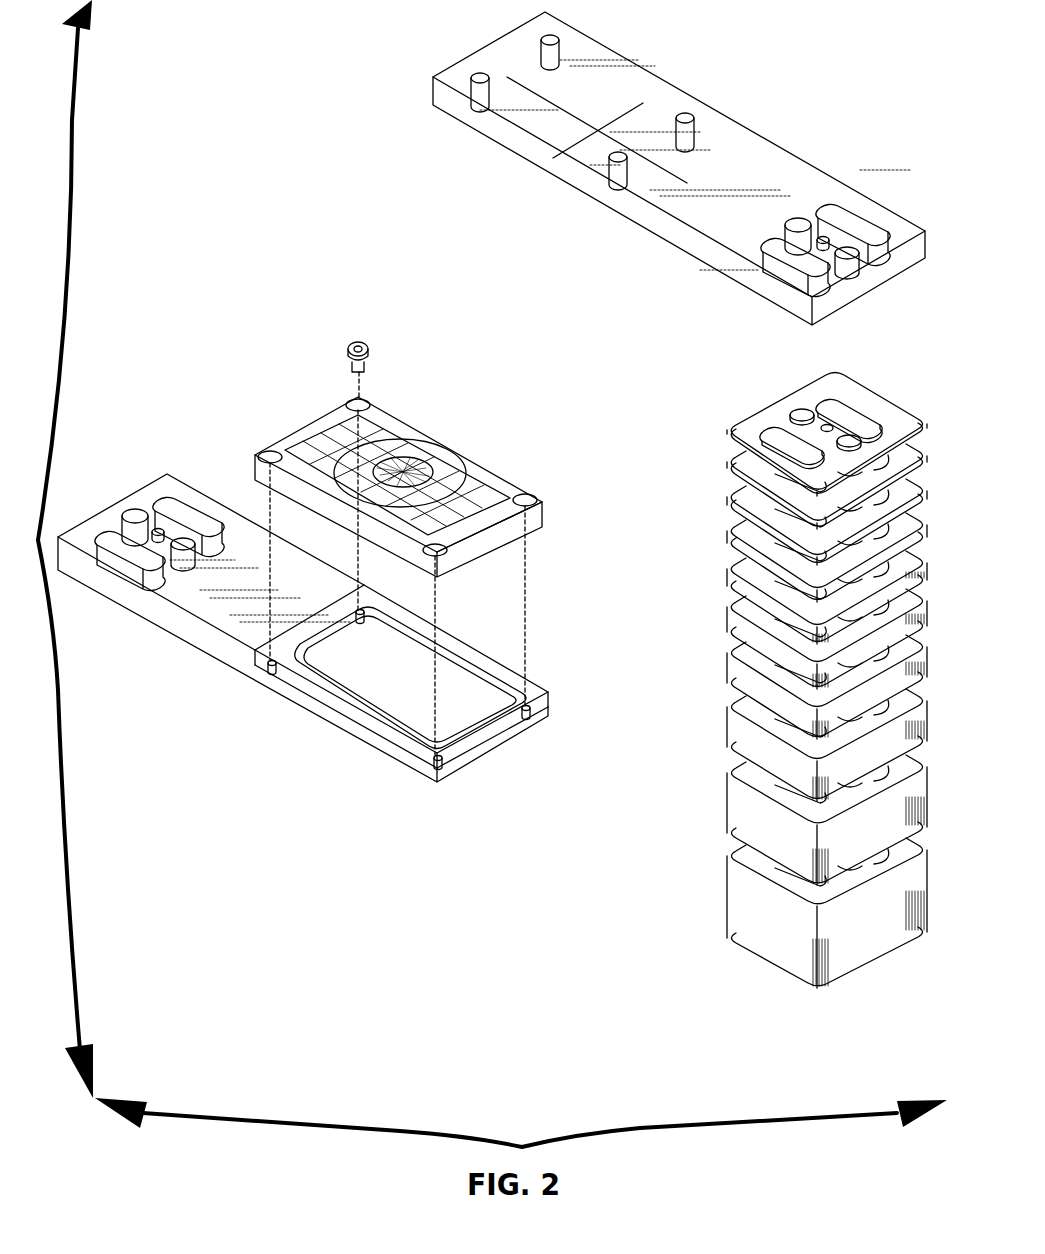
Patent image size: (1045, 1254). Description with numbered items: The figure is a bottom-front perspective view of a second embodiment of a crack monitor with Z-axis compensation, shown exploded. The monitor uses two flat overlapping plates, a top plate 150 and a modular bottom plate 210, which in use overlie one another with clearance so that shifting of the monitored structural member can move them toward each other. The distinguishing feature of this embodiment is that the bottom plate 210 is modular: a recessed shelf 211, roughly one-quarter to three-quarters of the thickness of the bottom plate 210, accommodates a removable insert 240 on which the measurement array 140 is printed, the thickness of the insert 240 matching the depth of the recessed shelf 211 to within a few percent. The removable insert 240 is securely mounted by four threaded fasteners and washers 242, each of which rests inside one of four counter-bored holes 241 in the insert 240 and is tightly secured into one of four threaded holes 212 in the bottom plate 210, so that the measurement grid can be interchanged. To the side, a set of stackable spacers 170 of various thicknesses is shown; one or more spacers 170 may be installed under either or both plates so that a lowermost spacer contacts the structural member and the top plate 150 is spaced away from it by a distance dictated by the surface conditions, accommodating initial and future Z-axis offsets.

The top plate 150 is at (605, 217).
The modular bottom plate 210 is at (213, 661).
The recessed shelf 211 is at (292, 662).
The threaded holes 212 is at (425, 773).
The measurement array 140 is at (425, 475).
The removable insert 240 is at (520, 458).
The counter-bored holes 241 is at (542, 484).
The threaded fasteners and washers 242 is at (328, 358).
The stackable spacers 170 is at (709, 432).